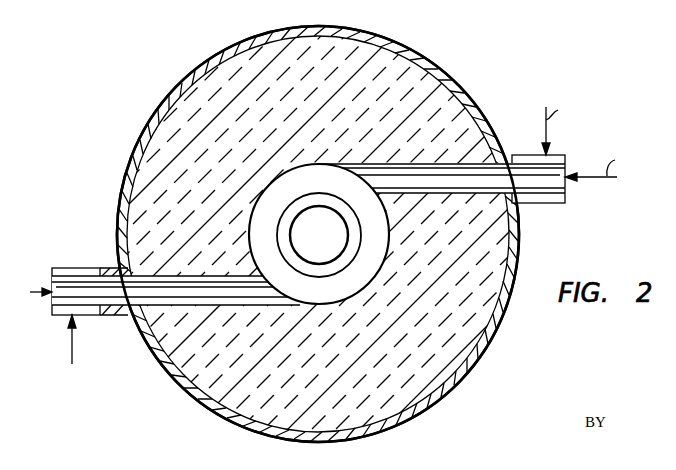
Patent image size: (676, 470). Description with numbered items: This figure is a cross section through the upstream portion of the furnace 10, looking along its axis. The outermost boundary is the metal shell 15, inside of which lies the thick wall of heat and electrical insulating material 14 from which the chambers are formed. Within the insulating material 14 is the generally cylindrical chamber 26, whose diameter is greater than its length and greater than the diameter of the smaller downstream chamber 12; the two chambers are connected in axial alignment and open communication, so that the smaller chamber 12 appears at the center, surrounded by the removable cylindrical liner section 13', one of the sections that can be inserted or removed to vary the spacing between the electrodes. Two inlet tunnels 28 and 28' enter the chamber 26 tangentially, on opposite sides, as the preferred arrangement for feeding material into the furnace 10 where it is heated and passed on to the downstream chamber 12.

The furnace 10 is at (157, 368).
The heat and electrically insulated chamber 12 is at (330, 245).
The section of liner 13' is at (319, 224).
The heat and electrical insulating material 14 is at (139, 161).
The metal shell 15 is at (201, 65).
The cylindrical chamber 26 is at (331, 301).
The inlet tunnel 28 is at (166, 316).
The inlet tunnel 28' is at (484, 150).